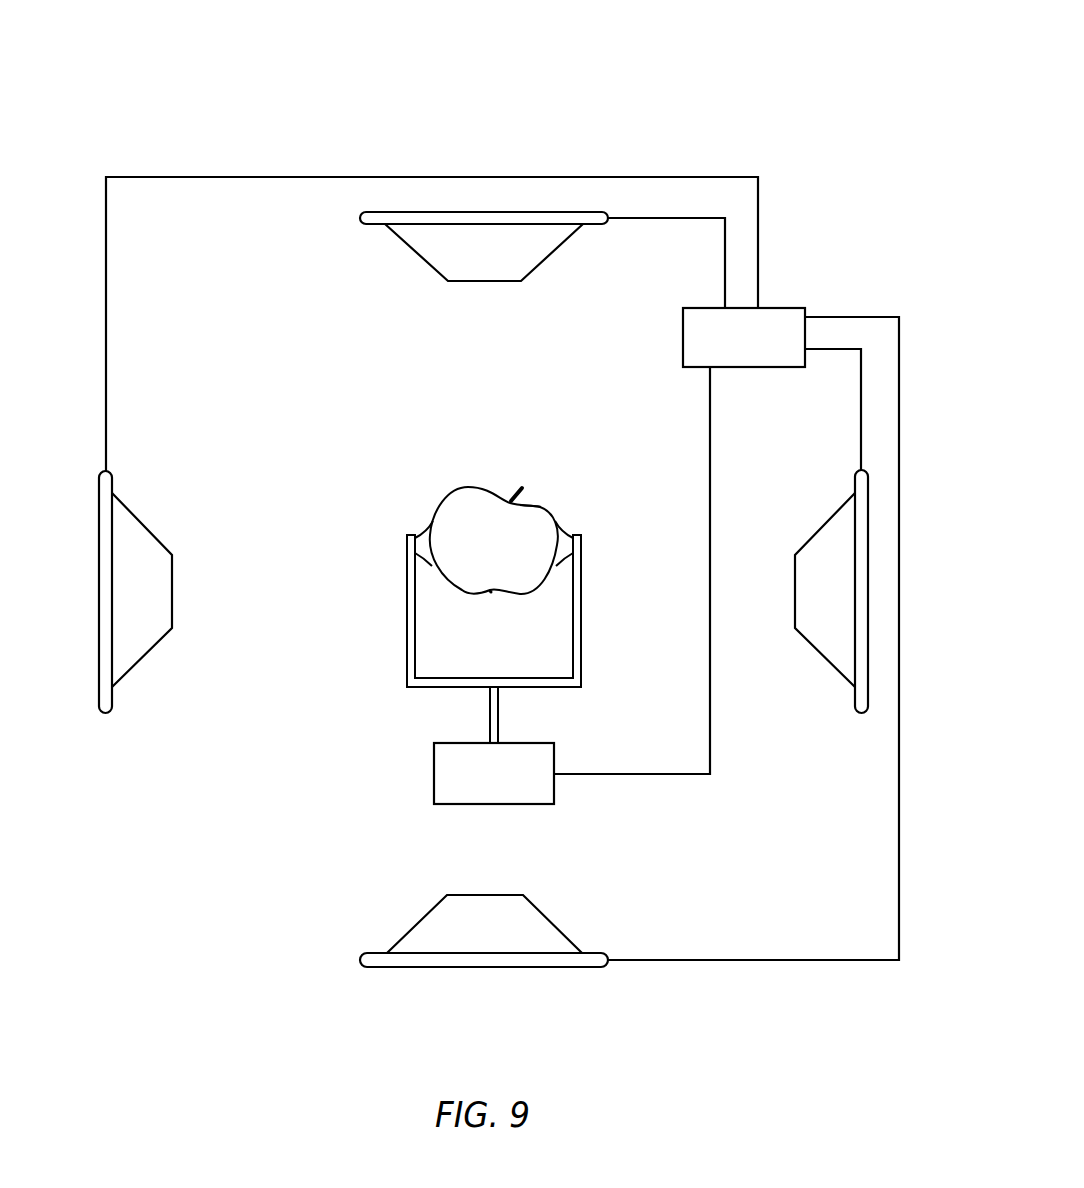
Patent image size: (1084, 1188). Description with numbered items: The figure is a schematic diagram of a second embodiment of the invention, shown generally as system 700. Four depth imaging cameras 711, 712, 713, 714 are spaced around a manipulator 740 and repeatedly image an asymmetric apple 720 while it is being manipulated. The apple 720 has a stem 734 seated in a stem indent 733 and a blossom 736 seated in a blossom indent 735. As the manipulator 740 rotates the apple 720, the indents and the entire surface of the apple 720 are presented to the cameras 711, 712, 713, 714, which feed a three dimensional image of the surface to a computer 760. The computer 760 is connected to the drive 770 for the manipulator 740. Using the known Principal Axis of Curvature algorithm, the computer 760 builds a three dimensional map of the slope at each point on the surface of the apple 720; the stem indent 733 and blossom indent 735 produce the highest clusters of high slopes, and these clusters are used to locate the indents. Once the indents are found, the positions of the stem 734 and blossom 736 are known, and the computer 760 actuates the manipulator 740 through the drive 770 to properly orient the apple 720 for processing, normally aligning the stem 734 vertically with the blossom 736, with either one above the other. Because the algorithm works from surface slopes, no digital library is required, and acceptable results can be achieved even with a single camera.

The second embodiment 700 is at (658, 94).
The depth imaging camera 711 is at (418, 252).
The depth imaging camera 712 is at (823, 660).
The depth imaging camera 713 is at (553, 923).
The depth imaging camera 714 is at (145, 523).
The asymmetric apple 720 is at (450, 465).
The stem indent 733 is at (538, 505).
The stem 734 is at (524, 486).
The blossom indent 735 is at (490, 593).
The blossom 736 is at (488, 592).
The manipulator 740 is at (393, 635).
The computer 760 is at (763, 350).
The drive 770 is at (514, 787).